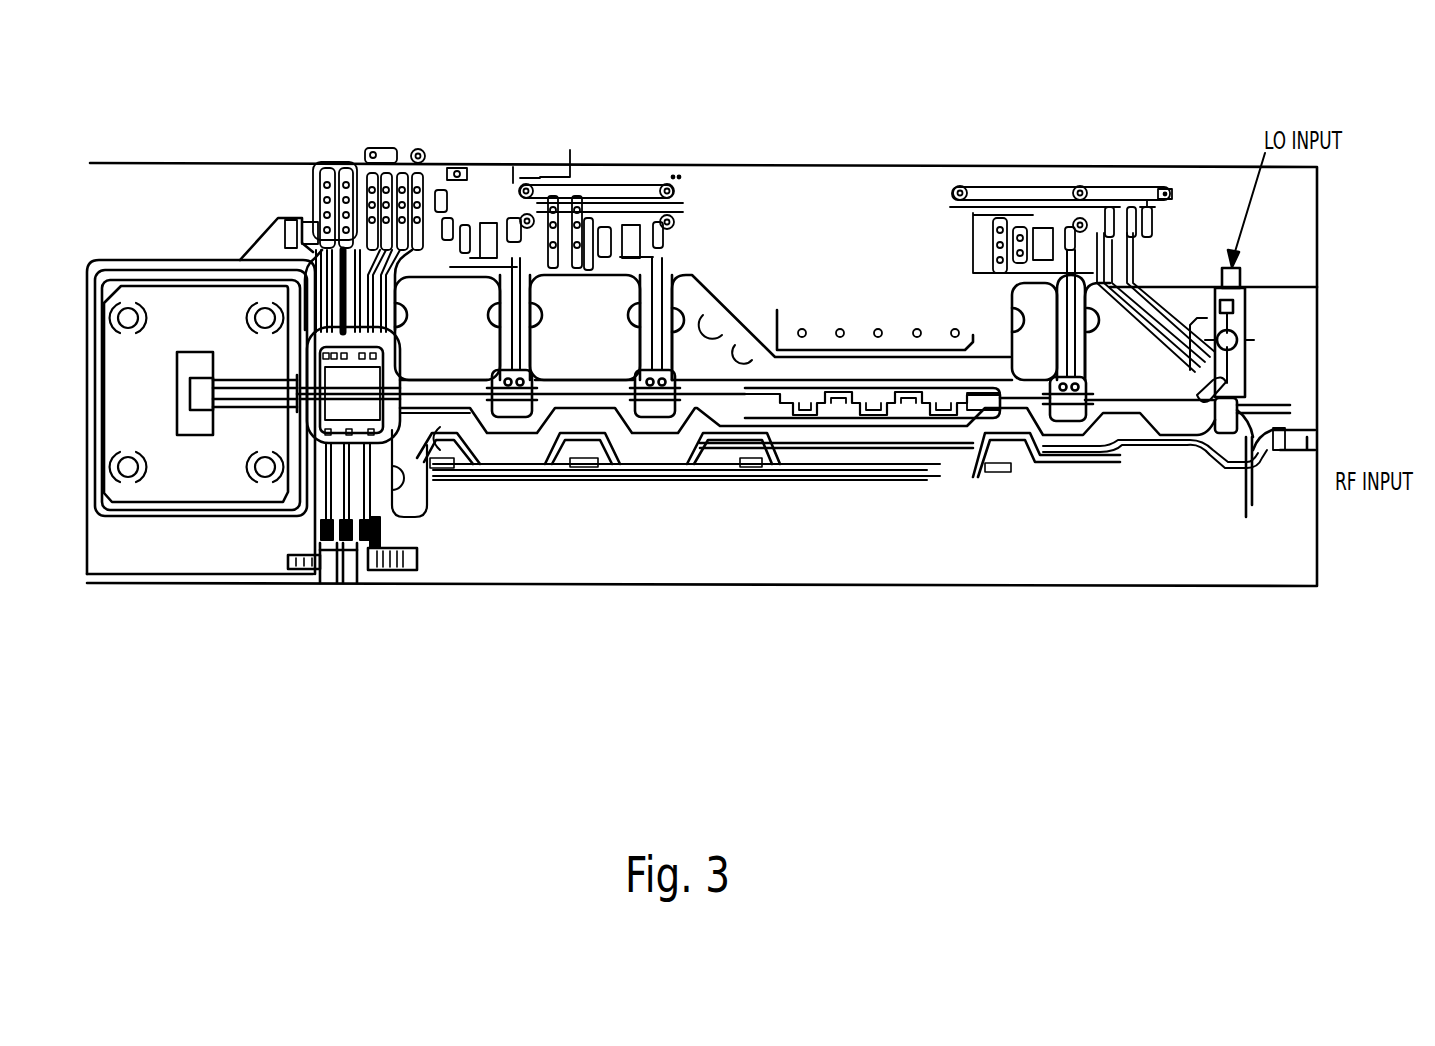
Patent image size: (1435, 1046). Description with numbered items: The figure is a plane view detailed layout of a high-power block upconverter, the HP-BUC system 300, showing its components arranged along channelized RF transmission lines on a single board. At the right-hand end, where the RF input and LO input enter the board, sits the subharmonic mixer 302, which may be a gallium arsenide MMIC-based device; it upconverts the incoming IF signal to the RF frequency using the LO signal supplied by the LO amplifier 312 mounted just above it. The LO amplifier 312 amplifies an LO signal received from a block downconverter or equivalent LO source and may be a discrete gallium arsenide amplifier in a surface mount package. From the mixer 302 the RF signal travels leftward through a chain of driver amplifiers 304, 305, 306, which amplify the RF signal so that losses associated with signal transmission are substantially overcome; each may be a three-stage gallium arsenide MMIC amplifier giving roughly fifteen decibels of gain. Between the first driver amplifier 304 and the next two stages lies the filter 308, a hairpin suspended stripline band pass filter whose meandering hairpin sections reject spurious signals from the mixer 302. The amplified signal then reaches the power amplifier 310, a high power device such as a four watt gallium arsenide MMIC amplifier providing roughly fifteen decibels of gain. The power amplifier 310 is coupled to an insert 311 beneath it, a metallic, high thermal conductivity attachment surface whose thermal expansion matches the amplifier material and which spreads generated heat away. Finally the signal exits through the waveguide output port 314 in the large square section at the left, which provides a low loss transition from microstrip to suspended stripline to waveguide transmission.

The HP-BUC system 300 is at (320, 72).
The subharmonic mixer 302 is at (1223, 433).
The driver amplifier 304 is at (1068, 415).
The driver amplifier 305 is at (658, 405).
The driver amplifier 306 is at (514, 405).
The filter 308 is at (870, 420).
The power amplifier 310 is at (383, 427).
The insert 311 is at (306, 570).
The LO amplifier 312 is at (1207, 320).
The waveguide output port 314 is at (192, 440).